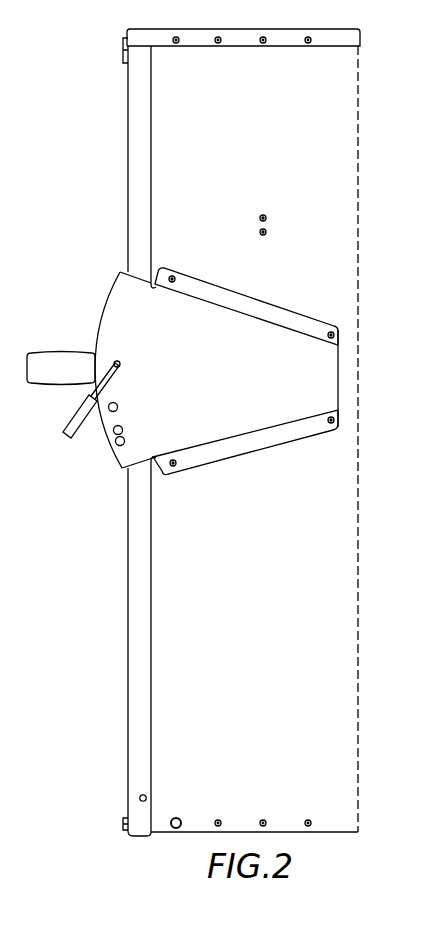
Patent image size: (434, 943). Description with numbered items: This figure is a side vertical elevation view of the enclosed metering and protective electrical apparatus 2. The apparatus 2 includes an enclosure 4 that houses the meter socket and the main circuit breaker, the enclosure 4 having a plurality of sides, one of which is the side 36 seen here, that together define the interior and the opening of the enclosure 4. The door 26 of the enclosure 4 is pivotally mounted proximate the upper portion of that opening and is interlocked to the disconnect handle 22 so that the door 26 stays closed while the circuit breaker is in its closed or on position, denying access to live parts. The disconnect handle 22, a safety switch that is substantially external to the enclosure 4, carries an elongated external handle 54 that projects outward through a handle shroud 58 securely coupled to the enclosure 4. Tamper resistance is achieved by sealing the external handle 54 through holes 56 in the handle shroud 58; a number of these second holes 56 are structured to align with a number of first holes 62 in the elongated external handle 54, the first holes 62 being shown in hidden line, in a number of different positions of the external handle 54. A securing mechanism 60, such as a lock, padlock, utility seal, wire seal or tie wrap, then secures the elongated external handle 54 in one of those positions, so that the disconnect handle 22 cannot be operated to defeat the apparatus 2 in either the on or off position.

The enclosed metering and protective electrical apparatus 2 is at (107, 127).
The enclosure 4 is at (273, 430).
The disconnect handle 22 is at (169, 378).
The door 26 is at (128, 698).
The side 36 is at (359, 512).
The external handle 54 is at (61, 362).
The holes 56 is at (118, 409).
The handle shroud 58 is at (241, 330).
The securing mechanism 60 is at (74, 418).
The first holes 62 is at (121, 362).